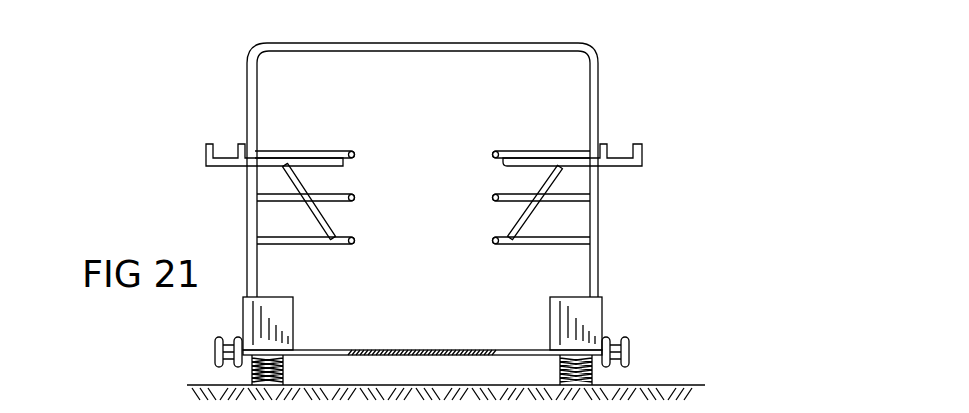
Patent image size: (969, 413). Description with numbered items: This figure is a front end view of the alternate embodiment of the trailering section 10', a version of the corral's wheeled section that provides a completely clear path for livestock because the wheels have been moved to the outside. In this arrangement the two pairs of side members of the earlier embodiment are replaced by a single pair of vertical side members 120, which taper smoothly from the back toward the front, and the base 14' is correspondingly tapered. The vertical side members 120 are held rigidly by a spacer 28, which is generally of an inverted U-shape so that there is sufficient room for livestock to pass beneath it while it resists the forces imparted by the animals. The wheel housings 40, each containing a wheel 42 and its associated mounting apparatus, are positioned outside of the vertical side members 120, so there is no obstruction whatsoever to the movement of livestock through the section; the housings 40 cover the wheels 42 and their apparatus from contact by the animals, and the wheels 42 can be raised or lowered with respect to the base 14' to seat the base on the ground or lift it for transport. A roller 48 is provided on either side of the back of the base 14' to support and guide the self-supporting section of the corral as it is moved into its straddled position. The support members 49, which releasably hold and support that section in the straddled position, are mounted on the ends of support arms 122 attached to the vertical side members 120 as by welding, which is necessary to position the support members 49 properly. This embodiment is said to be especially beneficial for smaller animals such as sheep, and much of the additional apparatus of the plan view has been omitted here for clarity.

The trailering section 10' is at (436, 214).
The spacer 28 is at (598, 73).
The support member 49 is at (207, 148).
The support arm 122 is at (255, 161).
The vertical side member 120 is at (266, 214).
The wheel housing 40 is at (290, 303).
The base 14' is at (422, 334).
The wheel 42 is at (284, 368).
The roller 48 is at (215, 346).